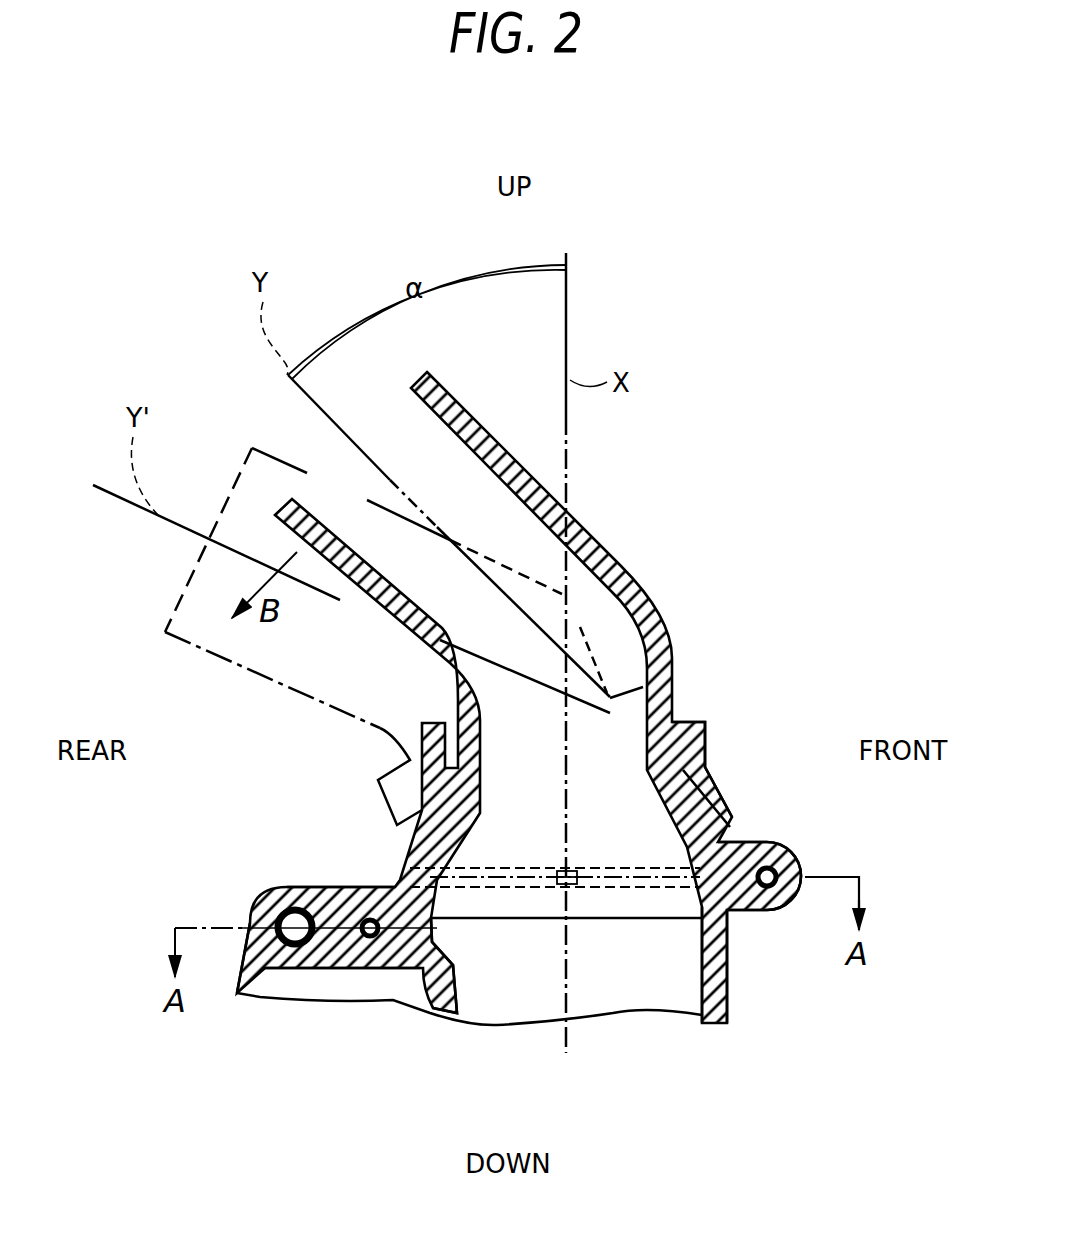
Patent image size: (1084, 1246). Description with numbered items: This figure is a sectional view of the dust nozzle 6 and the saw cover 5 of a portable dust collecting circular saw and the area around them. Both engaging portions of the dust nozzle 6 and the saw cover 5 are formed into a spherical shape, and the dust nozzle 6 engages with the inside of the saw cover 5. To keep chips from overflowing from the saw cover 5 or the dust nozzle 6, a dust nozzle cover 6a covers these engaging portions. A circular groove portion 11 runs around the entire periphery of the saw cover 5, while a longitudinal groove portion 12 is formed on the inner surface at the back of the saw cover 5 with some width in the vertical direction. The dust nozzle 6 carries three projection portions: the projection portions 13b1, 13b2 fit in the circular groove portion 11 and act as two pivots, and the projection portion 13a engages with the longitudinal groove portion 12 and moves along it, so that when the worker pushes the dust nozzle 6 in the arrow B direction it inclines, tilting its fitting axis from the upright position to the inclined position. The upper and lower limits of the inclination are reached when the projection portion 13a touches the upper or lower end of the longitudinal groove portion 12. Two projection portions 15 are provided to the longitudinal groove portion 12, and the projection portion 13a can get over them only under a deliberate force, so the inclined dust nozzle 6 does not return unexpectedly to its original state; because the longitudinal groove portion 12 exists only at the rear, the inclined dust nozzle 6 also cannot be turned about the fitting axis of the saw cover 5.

The saw cover 5 is at (728, 990).
The dust nozzle 6 is at (672, 653).
The dust nozzle cover 6a is at (707, 747).
The circular groove portion 11 is at (753, 842).
The longitudinal groove portion 12 is at (423, 965).
The projection portion 13a is at (407, 873).
The projection portion 13b1 is at (567, 884).
The projection portion 13b2 is at (577, 885).
The projection portions 15 is at (355, 887).